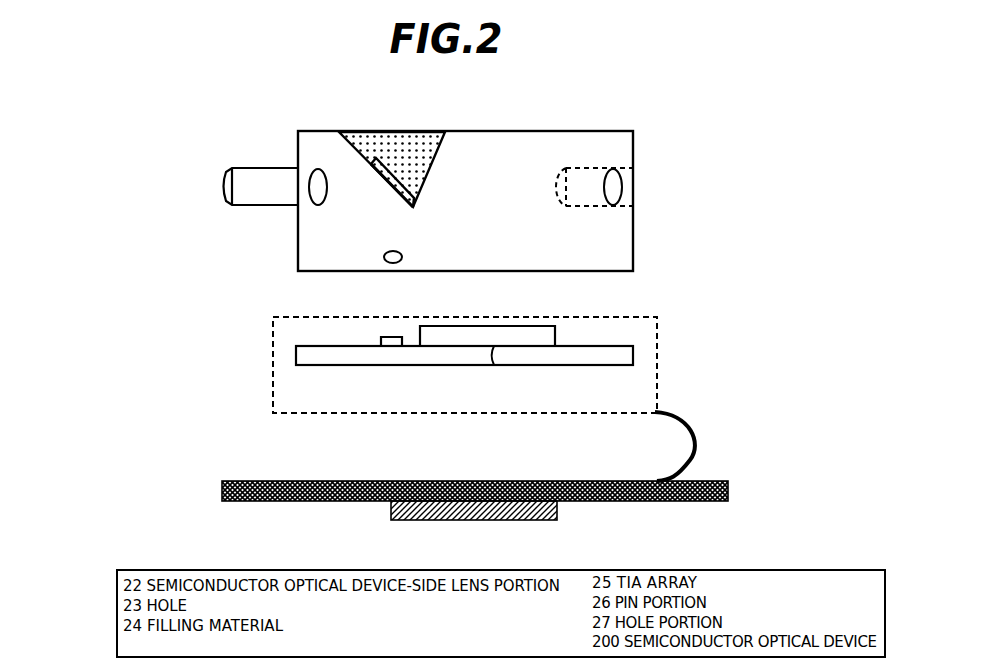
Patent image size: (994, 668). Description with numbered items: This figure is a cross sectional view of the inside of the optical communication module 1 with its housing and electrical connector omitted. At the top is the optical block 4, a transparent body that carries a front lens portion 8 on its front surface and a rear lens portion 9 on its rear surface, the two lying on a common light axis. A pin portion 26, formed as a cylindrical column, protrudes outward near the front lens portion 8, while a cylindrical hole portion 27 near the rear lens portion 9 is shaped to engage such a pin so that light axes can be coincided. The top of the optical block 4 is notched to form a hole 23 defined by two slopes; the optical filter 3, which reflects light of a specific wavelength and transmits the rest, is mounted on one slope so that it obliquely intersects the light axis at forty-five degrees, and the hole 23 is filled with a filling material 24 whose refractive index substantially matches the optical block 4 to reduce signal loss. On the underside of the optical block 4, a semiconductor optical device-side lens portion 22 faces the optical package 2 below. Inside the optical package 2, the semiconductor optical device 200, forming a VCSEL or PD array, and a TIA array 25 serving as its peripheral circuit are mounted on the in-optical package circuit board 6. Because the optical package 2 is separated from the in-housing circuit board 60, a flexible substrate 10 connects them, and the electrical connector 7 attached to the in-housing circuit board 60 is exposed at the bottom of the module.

The optical communication module 1 is at (200, 104).
The optical package 2 is at (273, 375).
The optical filter 3 is at (381, 166).
The optical block 4 is at (557, 131).
The in-optical package circuit board 6 is at (563, 354).
The electrical connector 7 is at (391, 517).
The front lens portion 8 is at (318, 169).
The rear lens portion 9 is at (613, 169).
The flexible substrate 10 is at (688, 428).
The semiconductor optical device-side lens portion 22 is at (391, 263).
The hole 23 is at (410, 140).
The filling material 24 is at (407, 140).
The TIA array 25 is at (493, 366).
The pin portion 26 is at (249, 206).
The hole portion 27 is at (600, 207).
The in-housing circuit board 60 is at (241, 481).
The semiconductor optical device 200 is at (385, 350).